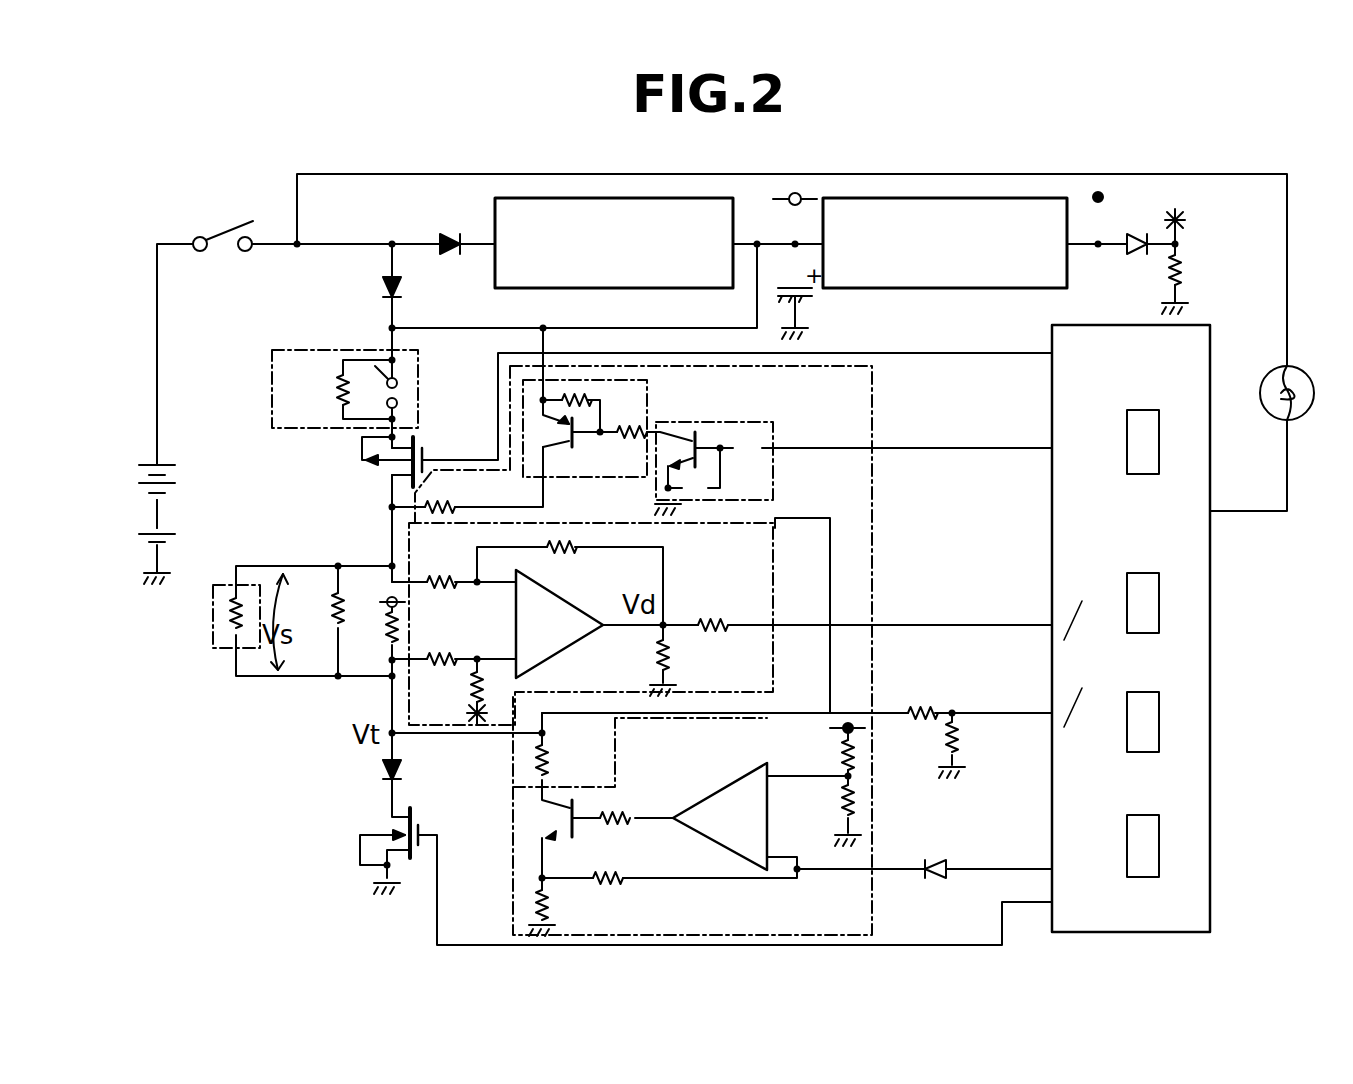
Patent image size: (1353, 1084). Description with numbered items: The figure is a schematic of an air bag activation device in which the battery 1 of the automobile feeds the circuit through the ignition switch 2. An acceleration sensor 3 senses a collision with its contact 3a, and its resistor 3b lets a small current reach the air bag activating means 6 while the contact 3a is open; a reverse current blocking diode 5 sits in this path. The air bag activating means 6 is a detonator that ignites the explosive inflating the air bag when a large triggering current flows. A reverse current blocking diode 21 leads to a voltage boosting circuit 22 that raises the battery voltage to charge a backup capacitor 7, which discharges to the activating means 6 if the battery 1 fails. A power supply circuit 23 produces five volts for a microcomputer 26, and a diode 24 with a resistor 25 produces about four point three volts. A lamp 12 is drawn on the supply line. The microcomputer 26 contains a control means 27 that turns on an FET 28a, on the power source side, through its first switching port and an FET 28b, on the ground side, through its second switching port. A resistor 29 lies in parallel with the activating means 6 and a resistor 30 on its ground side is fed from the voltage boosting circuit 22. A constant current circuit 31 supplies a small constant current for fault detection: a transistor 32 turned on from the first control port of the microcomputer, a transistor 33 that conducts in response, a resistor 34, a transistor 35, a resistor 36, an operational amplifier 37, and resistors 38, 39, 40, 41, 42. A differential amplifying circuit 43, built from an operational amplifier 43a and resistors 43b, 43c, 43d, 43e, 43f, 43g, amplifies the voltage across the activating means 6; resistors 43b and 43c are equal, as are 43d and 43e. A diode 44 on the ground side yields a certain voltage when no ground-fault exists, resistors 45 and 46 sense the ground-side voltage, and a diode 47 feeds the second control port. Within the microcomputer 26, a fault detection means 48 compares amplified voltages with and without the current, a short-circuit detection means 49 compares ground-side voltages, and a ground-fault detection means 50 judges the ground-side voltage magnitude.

The battery 1 is at (173, 507).
The ignition switch 2 is at (218, 231).
The acceleration sensor 3 is at (418, 390).
The contact 3a is at (378, 378).
The resistor 3b is at (336, 388).
The reverse current blocking diode 5 is at (382, 287).
The air bag activating means 6 is at (213, 630).
The backup capacitor 7 is at (812, 296).
The lamp 12 is at (1302, 368).
The reverse current blocking diode 21 is at (444, 236).
The voltage boosting circuit 22 is at (492, 274).
The power supply circuit 23 is at (943, 288).
The diode 24 is at (1138, 256).
The resistor 25 is at (1182, 270).
The microcomputer 26 is at (1212, 354).
The control means 27 is at (1140, 410).
The FET 28a is at (362, 455).
The FET 28b is at (358, 835).
The resistor 29 is at (332, 612).
The resistor 30 is at (380, 630).
The constant current circuit 31 is at (872, 578).
The transistor 32 is at (735, 422).
The transistor 33 is at (647, 400).
The resistor 34 is at (430, 507).
The transistor 35 is at (560, 830).
The resistor 36 is at (619, 807).
The operational amplifier 37 is at (713, 794).
The resistor 38 is at (552, 905).
The resistor 39 is at (614, 886).
The resistor 40 is at (840, 748).
The resistor 41 is at (840, 800).
The resistor 42 is at (552, 760).
The differential amplifying circuit 43 is at (773, 553).
The operational amplifier 43a is at (566, 655).
The resistor 43b is at (442, 580).
The resistor 43c is at (438, 652).
The resistor 43d is at (470, 686).
The resistor 43e is at (570, 556).
The resistor 43f is at (714, 623).
The resistor 43g is at (668, 655).
The diode 44 is at (405, 770).
The resistor 45 is at (920, 710).
The resistor 46 is at (958, 740).
The diode 47 is at (940, 880).
The fault detection means 48 is at (1140, 573).
The short-circuit detection means 49 is at (1140, 692).
The ground-fault detection means 50 is at (1142, 815).